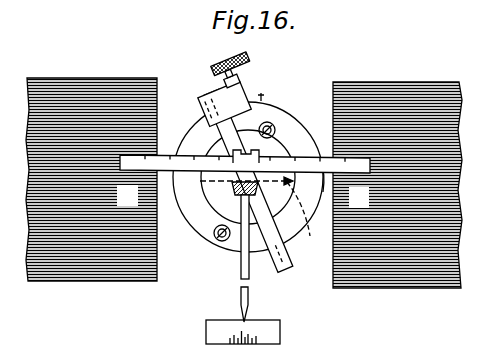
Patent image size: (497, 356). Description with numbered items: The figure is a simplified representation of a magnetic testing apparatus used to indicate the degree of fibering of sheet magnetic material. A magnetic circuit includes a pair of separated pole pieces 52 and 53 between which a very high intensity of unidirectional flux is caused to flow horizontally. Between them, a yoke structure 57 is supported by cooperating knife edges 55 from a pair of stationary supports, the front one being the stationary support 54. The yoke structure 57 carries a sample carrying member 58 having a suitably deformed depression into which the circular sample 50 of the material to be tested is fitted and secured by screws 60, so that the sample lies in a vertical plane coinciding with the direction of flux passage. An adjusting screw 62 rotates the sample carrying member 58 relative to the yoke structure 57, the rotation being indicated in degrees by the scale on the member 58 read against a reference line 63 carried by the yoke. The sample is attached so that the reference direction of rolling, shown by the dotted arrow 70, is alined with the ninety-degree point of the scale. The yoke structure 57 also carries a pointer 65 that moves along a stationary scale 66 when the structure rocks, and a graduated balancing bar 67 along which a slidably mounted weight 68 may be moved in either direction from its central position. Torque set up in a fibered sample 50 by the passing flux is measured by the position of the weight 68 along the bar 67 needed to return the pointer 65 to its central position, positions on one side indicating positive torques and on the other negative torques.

The sample 50 is at (289, 116).
The pole piece 52 is at (66, 78).
The pole piece 53 is at (372, 82).
The stationary support 54 is at (238, 194).
The knife edges 55 is at (259, 157).
The yoke structure 57 is at (293, 266).
The sample carrying member 58 is at (206, 243).
The screws 60 is at (270, 122).
The adjusting screw 62 is at (236, 56).
The reference line 63 is at (248, 92).
The pointer 65 is at (249, 301).
The stationary scale 66 is at (282, 322).
The graduated balancing bar 67 is at (323, 156).
The weight 68 is at (213, 93).
The dotted arrow 70 is at (307, 233).